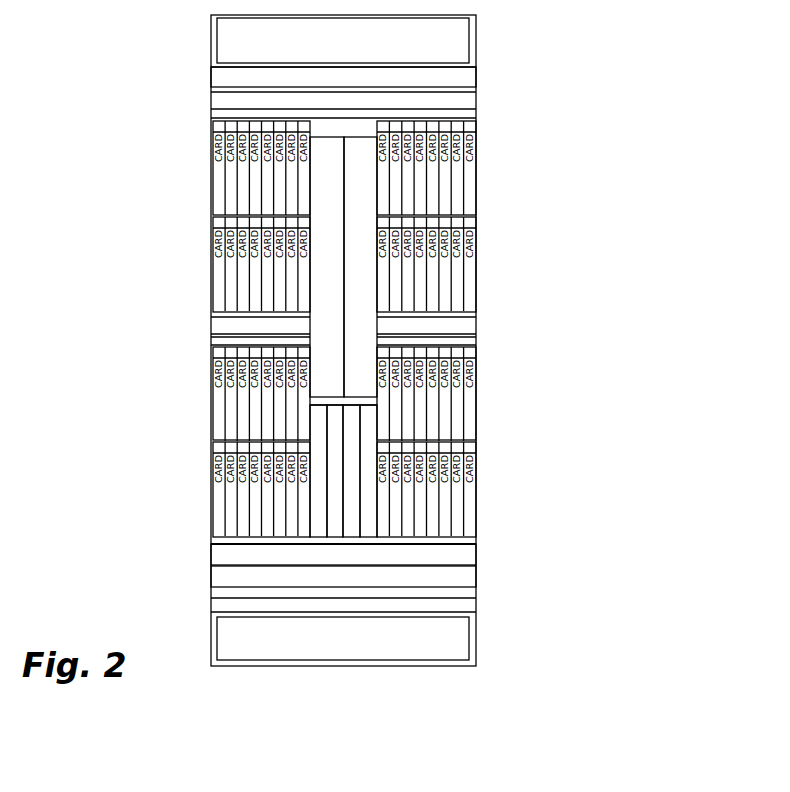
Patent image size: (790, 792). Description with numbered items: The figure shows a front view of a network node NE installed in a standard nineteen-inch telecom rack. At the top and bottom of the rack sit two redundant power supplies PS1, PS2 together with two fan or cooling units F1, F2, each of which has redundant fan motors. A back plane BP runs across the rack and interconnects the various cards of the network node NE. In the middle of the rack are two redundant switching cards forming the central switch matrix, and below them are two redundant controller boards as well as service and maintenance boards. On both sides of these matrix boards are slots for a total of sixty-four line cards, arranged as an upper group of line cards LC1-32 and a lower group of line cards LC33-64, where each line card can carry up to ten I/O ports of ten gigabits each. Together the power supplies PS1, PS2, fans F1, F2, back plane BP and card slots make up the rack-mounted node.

The power supply PS1 is at (383, 41).
The fan/cooling unit F1 is at (377, 74).
The line cards LC1-32 is at (203, 122).
The line cards LC33-64 is at (203, 342).
The back plane BP is at (380, 326).
The network node NE is at (414, 340).
The fan/cooling unit F2 is at (377, 565).
The power supply PS2 is at (386, 638).